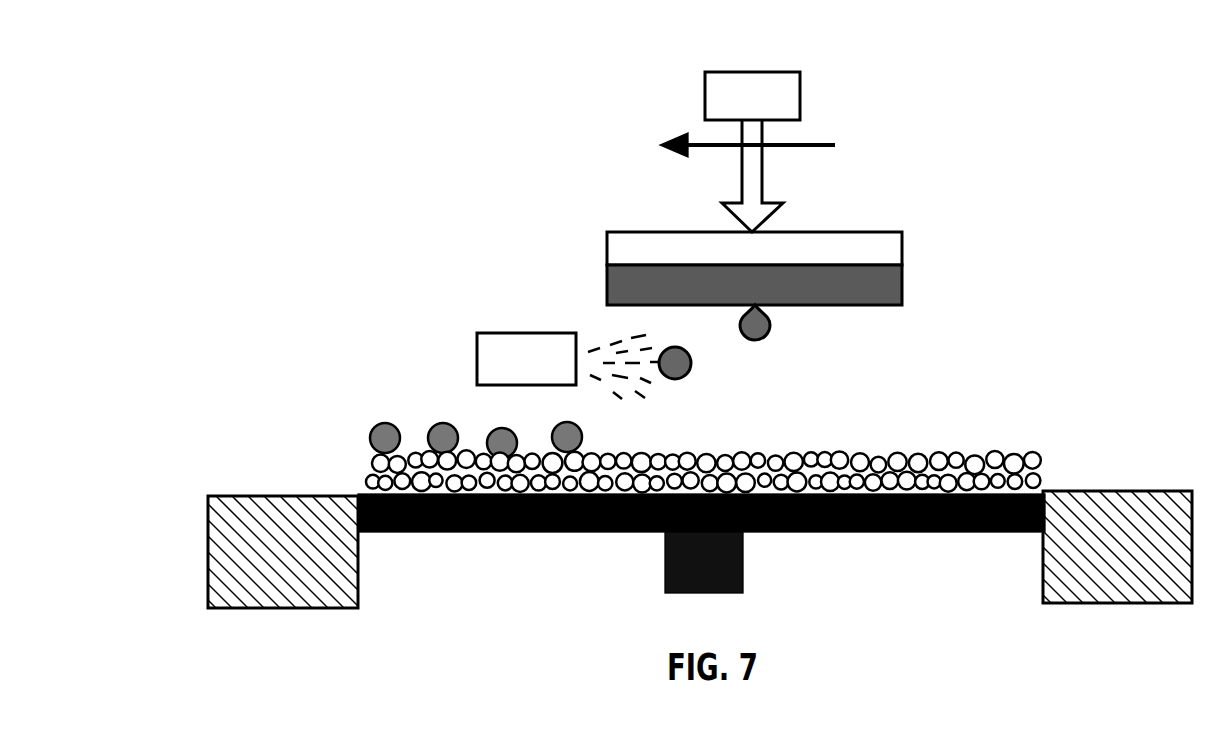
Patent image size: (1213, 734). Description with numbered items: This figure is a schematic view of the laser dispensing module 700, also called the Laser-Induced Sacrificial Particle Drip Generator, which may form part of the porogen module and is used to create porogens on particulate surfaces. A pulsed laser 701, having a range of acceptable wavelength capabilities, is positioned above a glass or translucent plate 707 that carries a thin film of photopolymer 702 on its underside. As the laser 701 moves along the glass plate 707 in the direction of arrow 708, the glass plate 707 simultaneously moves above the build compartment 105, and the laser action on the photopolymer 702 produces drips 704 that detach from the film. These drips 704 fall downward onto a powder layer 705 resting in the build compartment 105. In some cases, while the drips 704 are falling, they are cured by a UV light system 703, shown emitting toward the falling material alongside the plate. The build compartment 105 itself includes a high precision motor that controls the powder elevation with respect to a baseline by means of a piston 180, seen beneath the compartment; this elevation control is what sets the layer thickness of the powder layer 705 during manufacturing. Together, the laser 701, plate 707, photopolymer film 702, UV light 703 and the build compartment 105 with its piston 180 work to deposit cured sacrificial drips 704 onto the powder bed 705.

The laser dispensing module 700 is at (312, 46).
The pulsed laser 701 is at (762, 72).
The arrow 708 is at (815, 145).
The glass or translucent plate 707 is at (902, 240).
The thin film of photopolymer 702 is at (902, 283).
The UV light system 703 is at (525, 333).
The drips 704 is at (443, 423).
The powder layer 705 is at (1005, 443).
The build bed compartment 105 is at (1035, 491).
The piston 180 is at (837, 532).